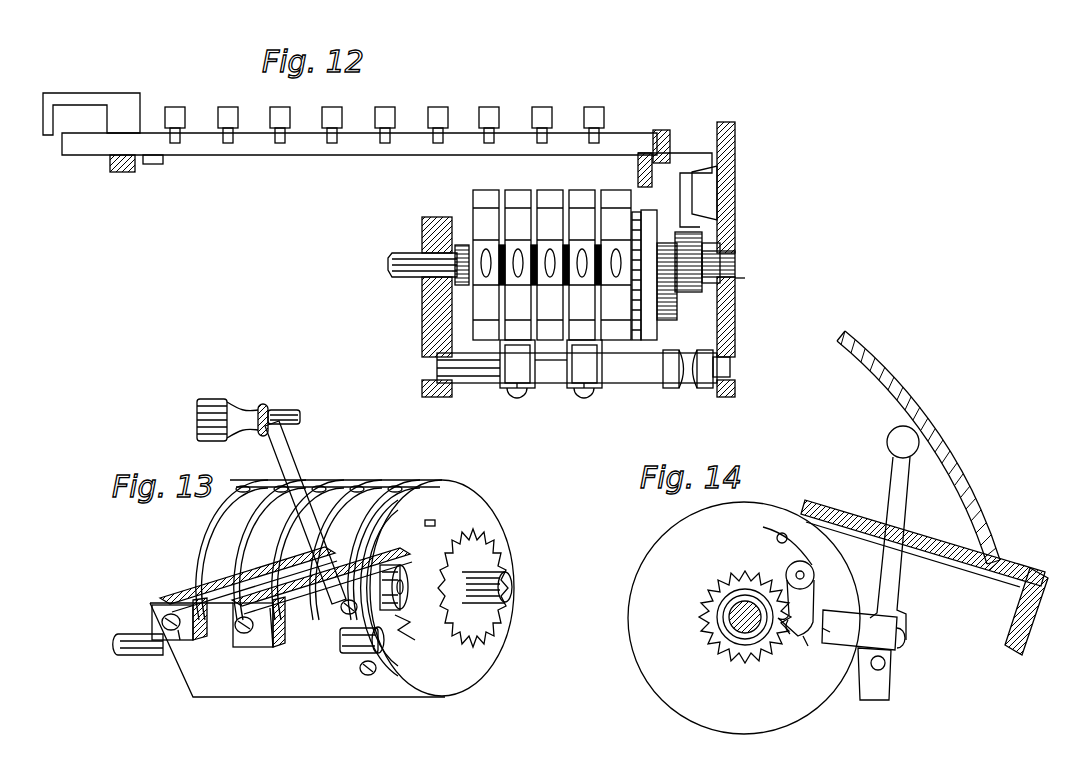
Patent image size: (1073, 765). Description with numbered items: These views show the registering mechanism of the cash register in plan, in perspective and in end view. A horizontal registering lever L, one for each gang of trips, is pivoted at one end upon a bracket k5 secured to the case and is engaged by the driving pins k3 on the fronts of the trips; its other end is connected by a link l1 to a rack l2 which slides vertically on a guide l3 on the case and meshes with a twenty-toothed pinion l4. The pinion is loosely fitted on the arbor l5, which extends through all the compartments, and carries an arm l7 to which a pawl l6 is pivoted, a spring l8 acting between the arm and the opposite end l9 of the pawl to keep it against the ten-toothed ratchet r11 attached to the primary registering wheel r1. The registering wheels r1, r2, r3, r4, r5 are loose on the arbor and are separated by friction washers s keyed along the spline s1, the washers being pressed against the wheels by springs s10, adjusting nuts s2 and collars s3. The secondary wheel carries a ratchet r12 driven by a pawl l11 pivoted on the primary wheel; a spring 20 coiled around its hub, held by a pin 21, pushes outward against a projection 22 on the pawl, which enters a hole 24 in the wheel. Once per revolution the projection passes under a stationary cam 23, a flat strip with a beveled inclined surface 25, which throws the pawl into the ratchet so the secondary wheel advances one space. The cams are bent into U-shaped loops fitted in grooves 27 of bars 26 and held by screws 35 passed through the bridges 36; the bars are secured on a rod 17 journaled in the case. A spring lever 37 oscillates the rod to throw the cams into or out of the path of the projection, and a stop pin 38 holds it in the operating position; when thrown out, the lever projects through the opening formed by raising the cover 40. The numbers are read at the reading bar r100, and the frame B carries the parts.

In FIG. 12, the registering lever L is at (252, 150).
In FIG. 12, the bracket k5 is at (91, 114).
In FIG. 12, the keys j is at (176, 106).
In FIG. 12, the driving pins k3 is at (440, 136).
In FIG. 12, the link l1 is at (671, 160).
In FIG. 12, the rack l2 is at (638, 182).
In FIG. 12, the guide l3 is at (706, 197).
In FIG. 12, the frame plate B is at (729, 236).
In FIG. 14, the frame plate B is at (1012, 608).
In FIG. 12, the arbor l5 is at (738, 266).
In FIG. 13, the arbor l5 is at (512, 585).
In FIG. 14, the arbor l5 is at (738, 625).
In FIG. 12, the collar s3 is at (737, 282).
In FIG. 12, the adjusting nut s2 is at (440, 287).
In FIG. 12, the spring s10 is at (470, 250).
In FIG. 12, the registering wheel r5 is at (486, 192).
In FIG. 13, the registering wheel r5 is at (262, 470).
In FIG. 12, the registering wheel r4 is at (518, 192).
In FIG. 13, the registering wheel r4 is at (270, 550).
In FIG. 12, the registering wheel r3 is at (550, 192).
In FIG. 13, the registering wheel r3 is at (326, 478).
In FIG. 12, the secondary registering wheel r2 is at (582, 192).
In FIG. 13, the secondary registering wheel r2 is at (370, 478).
In FIG. 12, the primary registering wheel r1 is at (605, 192).
In FIG. 13, the primary registering wheel r1 is at (410, 478).
In FIG. 12, the ratchet r11 is at (640, 222).
In FIG. 13, the ratchet r11 is at (436, 524).
In FIG. 12, the pawl l6 is at (648, 330).
In FIG. 13, the pawl l6 is at (402, 527).
In FIG. 12, the arm l7 is at (678, 300).
In FIG. 13, the arm l7 is at (400, 587).
In FIG. 12, the pinion l4 is at (690, 292).
In FIG. 13, the pinion l4 is at (500, 562).
In FIG. 13, the spring l8 is at (414, 627).
In FIG. 13, the end of pawl l9 is at (395, 640).
In FIG. 12, the bar 26 is at (583, 369).
In FIG. 13, the bar 26 is at (297, 648).
In FIG. 14, the bar 26 is at (874, 674).
In FIG. 12, the stationary cam 23 is at (500, 345).
In FIG. 13, the stationary cam 23 is at (190, 590).
In FIG. 14, the stationary cam 23 is at (859, 630).
In FIG. 12, the bridge 36 is at (548, 379).
In FIG. 13, the bridge 36 is at (216, 633).
In FIG. 12, the screw 35 is at (512, 396).
In FIG. 13, the screw 35 is at (178, 636).
In FIG. 14, the screw 35 is at (904, 641).
In FIG. 12, the groove 27 is at (542, 384).
In FIG. 13, the groove 27 is at (274, 606).
In FIG. 13, the rod 17 is at (125, 636).
In FIG. 14, the rod 17 is at (886, 663).
In FIG. 13, the spring lever 37 is at (288, 468).
In FIG. 14, the spring lever 37 is at (898, 495).
In FIG. 13, the stop pin 38 is at (290, 412).
In FIG. 14, the ratchet r12 is at (714, 593).
In FIG. 14, the spline s1 is at (735, 612).
In FIG. 14, the friction washer s is at (754, 640).
In FIG. 14, the spring 20 is at (777, 542).
In FIG. 14, the pin 21 is at (793, 541).
In FIG. 14, the projection 22 is at (810, 615).
In FIG. 14, the pawl l11 is at (793, 645).
In FIG. 14, the hole 24 is at (805, 640).
In FIG. 14, the inclined surface 25 is at (833, 638).
In FIG. 14, the reading bar r100 is at (922, 534).
In FIG. 14, the cover 40 is at (960, 487).